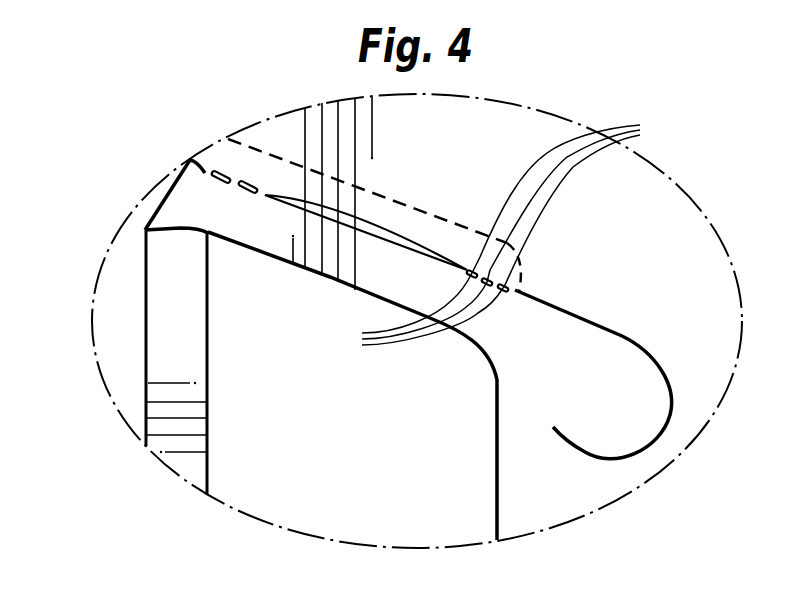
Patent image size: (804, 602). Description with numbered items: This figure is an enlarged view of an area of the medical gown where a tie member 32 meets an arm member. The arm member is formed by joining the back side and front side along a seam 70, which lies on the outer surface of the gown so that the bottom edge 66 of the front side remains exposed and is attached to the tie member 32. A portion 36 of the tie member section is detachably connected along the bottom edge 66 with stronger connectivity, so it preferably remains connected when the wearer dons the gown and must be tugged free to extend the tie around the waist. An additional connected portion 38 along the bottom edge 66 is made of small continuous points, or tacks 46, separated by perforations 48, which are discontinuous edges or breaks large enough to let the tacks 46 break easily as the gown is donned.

The tie member 32 is at (280, 290).
The portion 36 is at (242, 176).
The connected portion 38 is at (527, 278).
The tacks 46 is at (568, 204).
The perforations 48 is at (421, 311).
The bottom edge 66 is at (377, 228).
The seam 70 is at (428, 215).